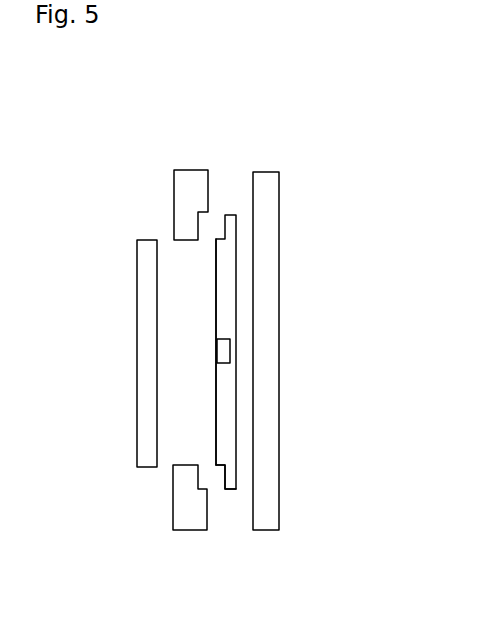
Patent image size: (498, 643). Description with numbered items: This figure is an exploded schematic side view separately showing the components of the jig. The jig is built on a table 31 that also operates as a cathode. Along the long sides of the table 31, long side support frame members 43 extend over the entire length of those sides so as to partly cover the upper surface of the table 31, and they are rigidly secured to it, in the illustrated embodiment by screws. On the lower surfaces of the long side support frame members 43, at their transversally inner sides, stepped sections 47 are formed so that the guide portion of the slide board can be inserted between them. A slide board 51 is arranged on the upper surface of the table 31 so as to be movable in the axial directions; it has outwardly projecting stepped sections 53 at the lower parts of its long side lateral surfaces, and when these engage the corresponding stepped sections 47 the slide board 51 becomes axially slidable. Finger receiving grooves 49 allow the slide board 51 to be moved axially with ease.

The table 31 is at (280, 335).
The long side support frame members 43 is at (207, 167).
The stepped sections 47 is at (198, 233).
The finger receiving grooves 49 is at (219, 351).
The slide board 51 is at (216, 268).
The outwardly projecting stepped sections 53 is at (222, 478).